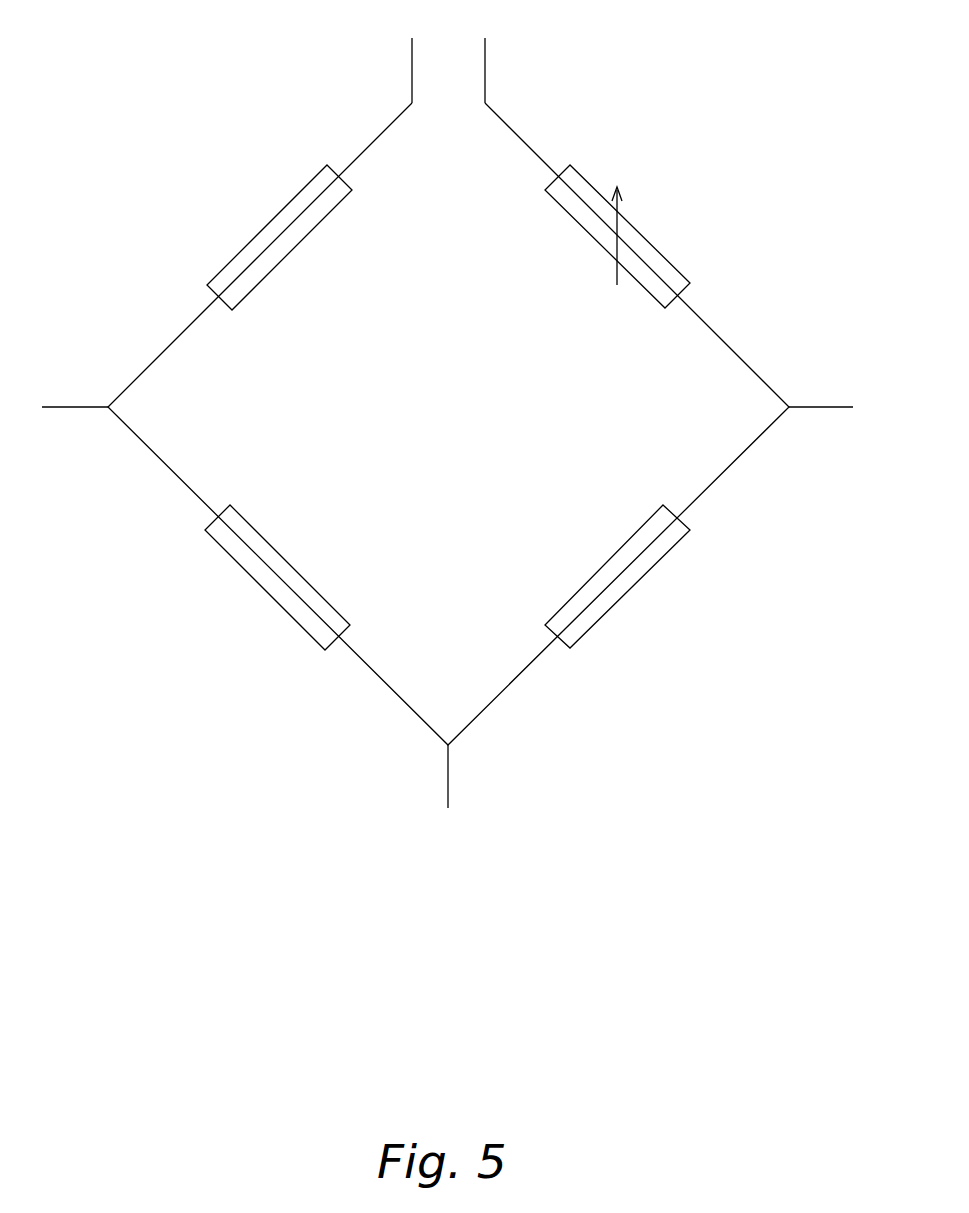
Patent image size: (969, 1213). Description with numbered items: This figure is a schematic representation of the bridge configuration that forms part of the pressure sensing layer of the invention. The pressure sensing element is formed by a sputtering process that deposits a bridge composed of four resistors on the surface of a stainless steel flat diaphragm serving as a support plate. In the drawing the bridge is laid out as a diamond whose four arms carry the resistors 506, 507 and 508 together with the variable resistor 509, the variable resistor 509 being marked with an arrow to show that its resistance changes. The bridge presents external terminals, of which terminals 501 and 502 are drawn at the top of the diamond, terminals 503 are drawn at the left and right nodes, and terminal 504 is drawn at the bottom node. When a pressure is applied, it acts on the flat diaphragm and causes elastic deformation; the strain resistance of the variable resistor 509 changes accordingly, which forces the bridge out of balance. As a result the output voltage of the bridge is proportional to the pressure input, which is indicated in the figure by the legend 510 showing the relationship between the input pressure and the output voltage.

The terminal 501 is at (412, 70).
The terminal 502 is at (485, 70).
The terminal 503 is at (75, 407).
The terminal 504 is at (448, 778).
The resistor 506 is at (266, 232).
The resistor 507 is at (270, 588).
The resistor 508 is at (622, 588).
The variable resistor 509 is at (630, 230).
The pressure input and output voltage indication 510 is at (506, 985).